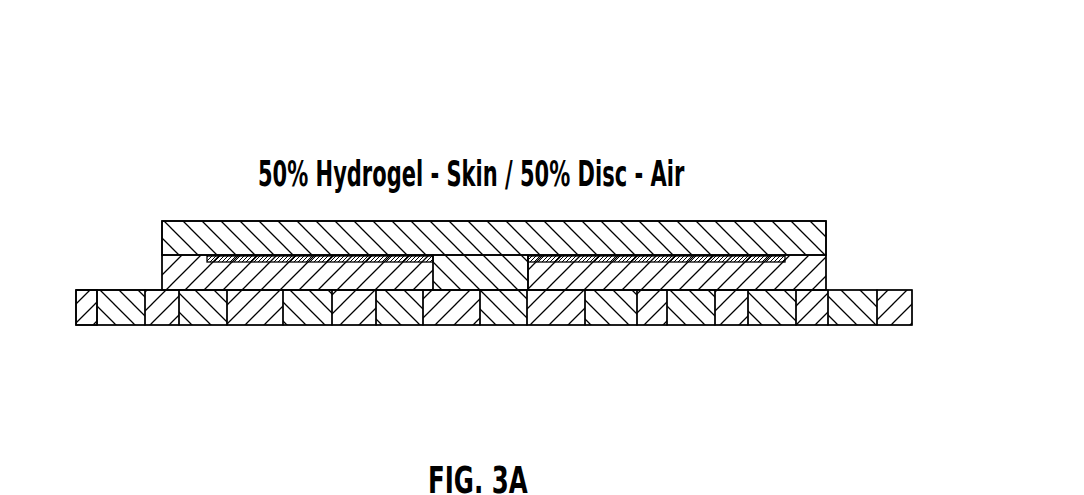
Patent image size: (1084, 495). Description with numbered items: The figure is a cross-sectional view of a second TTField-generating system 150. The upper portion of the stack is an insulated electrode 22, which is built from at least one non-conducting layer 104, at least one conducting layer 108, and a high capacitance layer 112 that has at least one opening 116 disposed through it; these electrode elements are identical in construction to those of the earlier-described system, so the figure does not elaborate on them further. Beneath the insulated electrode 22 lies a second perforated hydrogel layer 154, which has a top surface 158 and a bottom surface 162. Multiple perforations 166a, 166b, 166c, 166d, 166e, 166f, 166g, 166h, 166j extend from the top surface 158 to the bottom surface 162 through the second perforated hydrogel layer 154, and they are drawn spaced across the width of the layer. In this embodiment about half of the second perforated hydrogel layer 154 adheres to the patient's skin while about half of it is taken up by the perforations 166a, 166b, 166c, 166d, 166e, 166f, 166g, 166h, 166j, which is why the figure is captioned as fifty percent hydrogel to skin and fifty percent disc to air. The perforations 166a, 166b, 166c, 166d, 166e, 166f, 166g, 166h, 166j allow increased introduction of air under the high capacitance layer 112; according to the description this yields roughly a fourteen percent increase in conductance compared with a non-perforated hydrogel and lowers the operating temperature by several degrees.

The TTField-generating system 150 is at (848, 110).
The insulated electrode 22 is at (913, 221).
The non-conducting layer 104 is at (797, 232).
The conducting layer 108 is at (803, 248).
The high capacitance layer 112 is at (817, 283).
The opening 116 is at (528, 290).
The second perforated hydrogel layer 154 is at (80, 322).
The top surface 158 is at (86, 289).
The bottom surface 162 is at (92, 326).
The perforation 166a is at (120, 327).
The perforation 166b is at (205, 327).
The perforation 166c is at (308, 327).
The perforation 166d is at (402, 327).
The perforation 166e is at (505, 327).
The perforation 166f is at (610, 327).
The perforation 166g is at (690, 327).
The perforation 166h is at (772, 327).
The perforation 166j is at (856, 327).